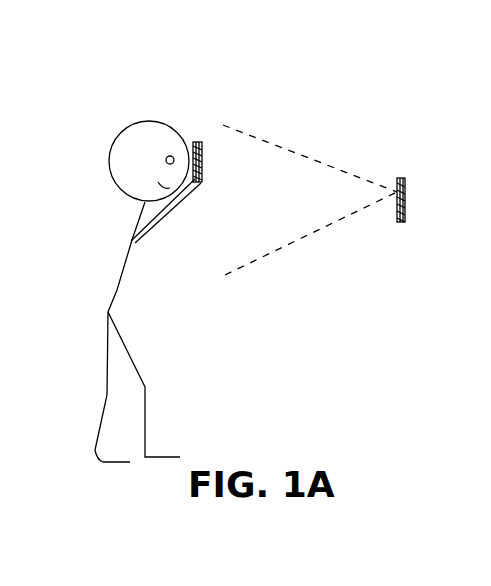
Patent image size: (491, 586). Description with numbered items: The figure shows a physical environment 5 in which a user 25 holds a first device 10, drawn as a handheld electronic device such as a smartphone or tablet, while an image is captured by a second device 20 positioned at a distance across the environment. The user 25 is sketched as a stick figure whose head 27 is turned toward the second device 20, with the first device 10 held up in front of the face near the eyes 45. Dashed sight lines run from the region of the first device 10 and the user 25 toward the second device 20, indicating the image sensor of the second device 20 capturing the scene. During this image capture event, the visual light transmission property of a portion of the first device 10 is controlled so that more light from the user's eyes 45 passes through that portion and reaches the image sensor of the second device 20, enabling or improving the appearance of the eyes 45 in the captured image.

The physical environment 5 is at (52, 60).
The first device 10 is at (203, 164).
The second device 20 is at (400, 181).
The user 25 is at (126, 258).
The head of user 27 is at (128, 128).
The eyes 45 is at (166, 160).